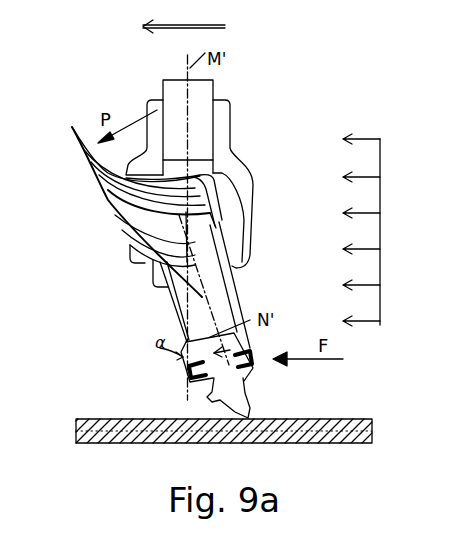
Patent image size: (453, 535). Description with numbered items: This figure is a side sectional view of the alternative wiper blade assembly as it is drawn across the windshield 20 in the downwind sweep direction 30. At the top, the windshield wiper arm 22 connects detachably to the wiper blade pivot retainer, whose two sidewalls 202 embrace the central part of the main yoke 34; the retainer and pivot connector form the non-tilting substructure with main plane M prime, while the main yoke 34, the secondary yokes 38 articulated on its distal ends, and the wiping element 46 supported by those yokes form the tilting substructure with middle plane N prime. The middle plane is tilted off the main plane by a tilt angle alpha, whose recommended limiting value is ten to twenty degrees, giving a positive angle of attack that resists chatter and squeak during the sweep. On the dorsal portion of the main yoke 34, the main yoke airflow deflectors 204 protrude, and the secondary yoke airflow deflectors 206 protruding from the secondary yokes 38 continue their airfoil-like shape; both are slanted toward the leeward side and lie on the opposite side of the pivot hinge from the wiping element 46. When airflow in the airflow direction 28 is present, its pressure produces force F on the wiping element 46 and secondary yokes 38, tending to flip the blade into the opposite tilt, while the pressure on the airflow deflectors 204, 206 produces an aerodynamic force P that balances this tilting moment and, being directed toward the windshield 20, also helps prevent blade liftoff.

The windshield 20 is at (108, 429).
The windshield wiper arm 22 is at (198, 127).
The airflow direction 28 is at (380, 190).
The downwind sweep direction 30 is at (203, 25).
The main yoke 34 is at (205, 203).
The secondary yokes 38 is at (212, 303).
The wiping element 46 is at (233, 393).
The sidewalls 202 is at (225, 158).
The main yoke airflow deflectors 204 is at (108, 176).
The secondary yoke airflow deflectors 206 is at (128, 232).